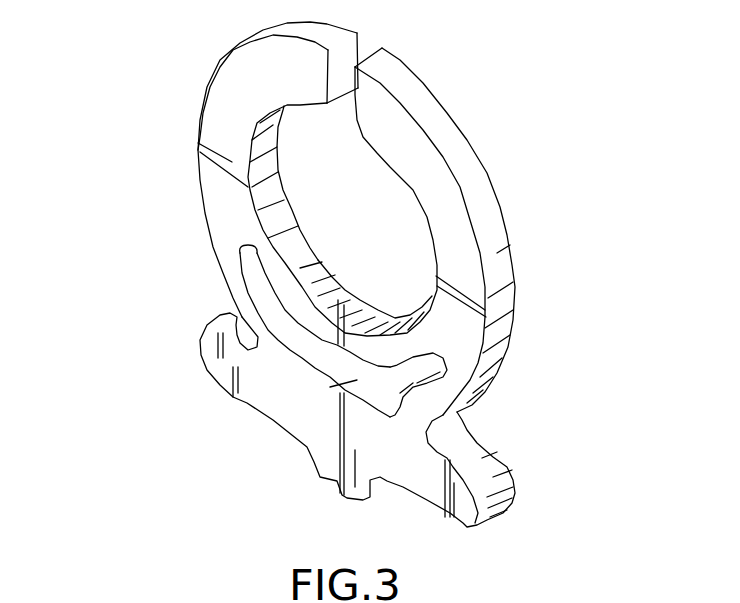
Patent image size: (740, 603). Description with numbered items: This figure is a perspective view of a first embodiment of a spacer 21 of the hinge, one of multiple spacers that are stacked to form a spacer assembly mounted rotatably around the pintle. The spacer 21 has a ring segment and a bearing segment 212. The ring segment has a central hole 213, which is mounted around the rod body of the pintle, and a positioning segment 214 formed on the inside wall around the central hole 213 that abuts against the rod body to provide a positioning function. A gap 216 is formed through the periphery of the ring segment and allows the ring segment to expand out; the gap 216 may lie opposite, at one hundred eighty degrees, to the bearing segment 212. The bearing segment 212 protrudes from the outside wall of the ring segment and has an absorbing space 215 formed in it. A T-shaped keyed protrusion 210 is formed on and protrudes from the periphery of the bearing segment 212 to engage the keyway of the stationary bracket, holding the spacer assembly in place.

The spacer 21 is at (417, 153).
The keyed protrusion 210 is at (337, 478).
The bearing segment 212 is at (462, 393).
The central hole 213 is at (392, 197).
The positioning segment 214 is at (382, 315).
The absorbing space 215 is at (300, 362).
The gap 216 is at (353, 63).